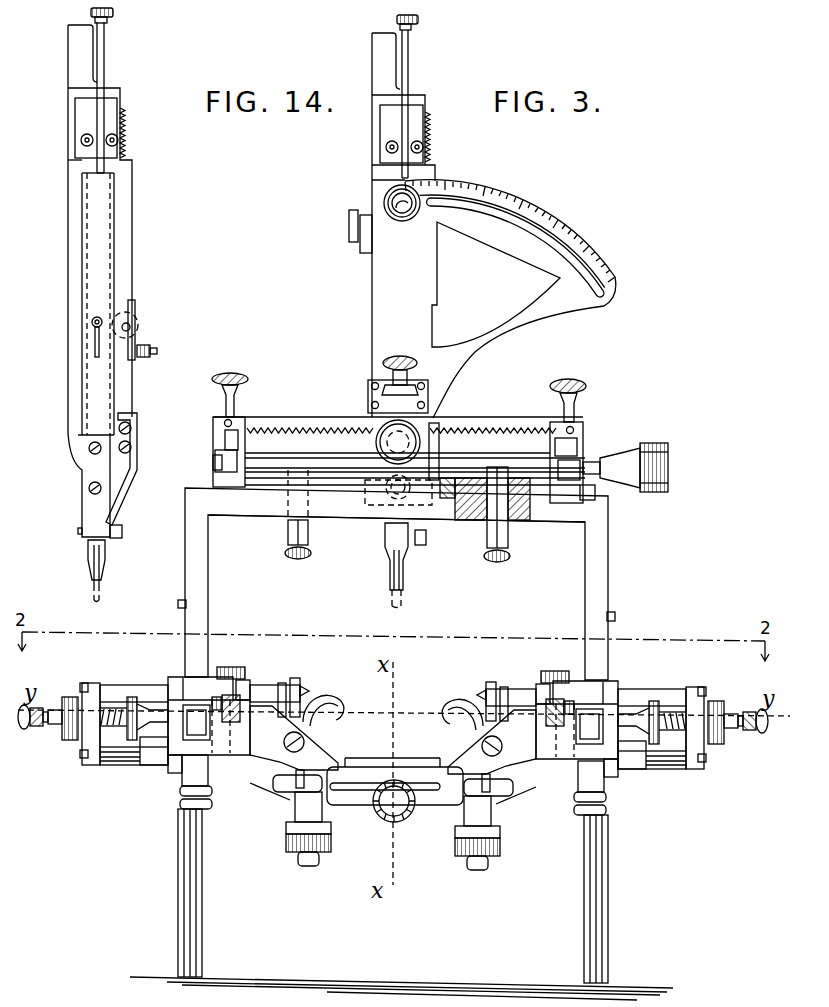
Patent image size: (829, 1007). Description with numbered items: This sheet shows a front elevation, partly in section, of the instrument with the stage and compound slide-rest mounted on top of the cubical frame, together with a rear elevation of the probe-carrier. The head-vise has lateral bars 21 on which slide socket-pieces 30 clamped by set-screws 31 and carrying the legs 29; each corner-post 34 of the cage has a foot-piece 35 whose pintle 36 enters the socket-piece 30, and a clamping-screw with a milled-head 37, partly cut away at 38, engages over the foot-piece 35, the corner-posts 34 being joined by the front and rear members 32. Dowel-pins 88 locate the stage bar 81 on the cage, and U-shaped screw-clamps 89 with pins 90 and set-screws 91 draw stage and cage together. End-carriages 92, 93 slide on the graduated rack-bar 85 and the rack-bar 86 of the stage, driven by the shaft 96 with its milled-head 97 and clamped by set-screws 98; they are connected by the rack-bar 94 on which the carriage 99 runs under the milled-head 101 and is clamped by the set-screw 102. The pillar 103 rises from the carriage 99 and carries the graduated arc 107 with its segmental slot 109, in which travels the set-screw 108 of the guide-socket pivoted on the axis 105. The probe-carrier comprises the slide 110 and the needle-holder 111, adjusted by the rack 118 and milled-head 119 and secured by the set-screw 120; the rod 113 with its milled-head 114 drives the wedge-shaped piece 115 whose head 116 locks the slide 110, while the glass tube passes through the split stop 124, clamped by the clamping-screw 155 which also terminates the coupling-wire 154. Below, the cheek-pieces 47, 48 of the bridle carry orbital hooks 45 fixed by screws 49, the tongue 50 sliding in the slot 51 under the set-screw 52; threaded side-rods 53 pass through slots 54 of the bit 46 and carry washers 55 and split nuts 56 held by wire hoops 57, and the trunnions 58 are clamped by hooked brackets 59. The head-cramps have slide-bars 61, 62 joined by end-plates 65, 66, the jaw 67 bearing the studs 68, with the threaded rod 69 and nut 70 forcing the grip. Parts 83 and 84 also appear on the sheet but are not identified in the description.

In FIG. 14, the needle-holder 111 is at (68, 116).
In FIG. 3, the needle-holder 111 is at (372, 136).
In FIG. 14, the rod 113 is at (105, 62).
In FIG. 3, the rod 113 is at (410, 63).
In FIG. 14, the milled-head 114 is at (113, 12).
In FIG. 3, the milled-head 114 is at (418, 18).
In FIG. 14, the rack 118 is at (125, 131).
In FIG. 3, the rack 118 is at (430, 132).
In FIG. 14, the slide 110 is at (87, 262).
In FIG. 14, the head 116 is at (93, 325).
In FIG. 14, the wedge-shaped piece 115 is at (96, 347).
In FIG. 14, the milled-head 119 is at (139, 323).
In FIG. 14, the set-screw 120 is at (156, 353).
In FIG. 14, the coupling-wire 154 is at (127, 497).
In FIG. 3, the coupling-wire 154 is at (440, 447).
In FIG. 14, the clamping-screw 155 is at (123, 532).
In FIG. 3, the clamping-screw 155 is at (421, 546).
In FIG. 14, the stop 124 is at (88, 563).
In FIG. 3, the stop 124 is at (388, 579).
In FIG. 3, the graduated arc 107 is at (493, 197).
In FIG. 3, the set-screw 108 is at (402, 222).
In FIG. 3, the segmental slot 109 is at (525, 232).
In FIG. 3, the pillar 103 is at (372, 318).
In FIG. 3, the set-screw 102 is at (390, 361).
In FIG. 3, the carriage 99 is at (380, 416).
In FIG. 3, the milled-head 101 is at (432, 421).
In FIG. 3, the rack-bar 94 is at (512, 425).
In FIG. 3, the shaft 96 is at (283, 458).
In FIG. 3, the end-carriage 93 is at (215, 432).
In FIG. 3, the rack-bar 86 is at (225, 444).
In FIG. 3, the bracket 84 is at (222, 466).
In FIG. 3, the set-screws 98 is at (240, 374).
In FIG. 3, the end-carriage 92 is at (585, 427).
In FIG. 3, the rack-bar 85 is at (575, 448).
In FIG. 3, the shaft 83 is at (575, 470).
In FIG. 3, the milled-head 97 is at (670, 466).
In FIG. 3, the bar 81 is at (566, 492).
In FIG. 3, the pin 90 is at (466, 522).
In FIG. 3, the screw-clamp 89 is at (506, 530).
In FIG. 3, the set-screw 91 is at (499, 563).
In FIG. 3, the axis 105 is at (383, 503).
In FIG. 3, the corner-post 34 is at (186, 572).
In FIG. 3, the front and rear members 32 is at (242, 507).
In FIG. 3, the dowel-pins 88 is at (178, 604).
In FIG. 3, the socket-piece 30 is at (238, 745).
In FIG. 3, the foot-piece 35 is at (185, 695).
In FIG. 3, the lateral bars 21 is at (195, 727).
In FIG. 3, the pintle 36 is at (213, 700).
In FIG. 3, the milled-head 37 is at (228, 668).
In FIG. 3, the cut-away portion 38 is at (246, 680).
In FIG. 3, the hooked brackets 59 is at (175, 776).
In FIG. 3, the legs 29 is at (178, 886).
In FIG. 3, the upper slide-bar 61 is at (107, 685).
In FIG. 3, the lower slide-bar 62 is at (122, 766).
In FIG. 3, the trunnions 58 is at (155, 770).
In FIG. 3, the set-screw 31 is at (157, 728).
In FIG. 3, the end-plate 66 is at (94, 768).
In FIG. 3, the nut 70 is at (68, 743).
In FIG. 3, the threaded rod 69 is at (38, 731).
In FIG. 3, the end-plate 65 is at (282, 686).
In FIG. 3, the jaw 67 is at (295, 678).
In FIG. 3, the studs 68 is at (305, 689).
In FIG. 3, the orbital hooks 45 is at (322, 710).
In FIG. 3, the screw 49 is at (284, 740).
In FIG. 3, the cheek-piece 47 is at (455, 753).
In FIG. 3, the cheek-piece 48 is at (357, 806).
In FIG. 3, the slot 51 is at (432, 791).
In FIG. 3, the set-screw 52 is at (388, 814).
In FIG. 3, the tongue 50 is at (317, 777).
In FIG. 3, the slots 54 is at (277, 783).
In FIG. 3, the bit 46 is at (277, 795).
In FIG. 3, the washer 55 is at (294, 800).
In FIG. 3, the hoop of wire 57 is at (287, 828).
In FIG. 3, the split nut 56 is at (302, 847).
In FIG. 3, the side-rods 53 is at (305, 862).